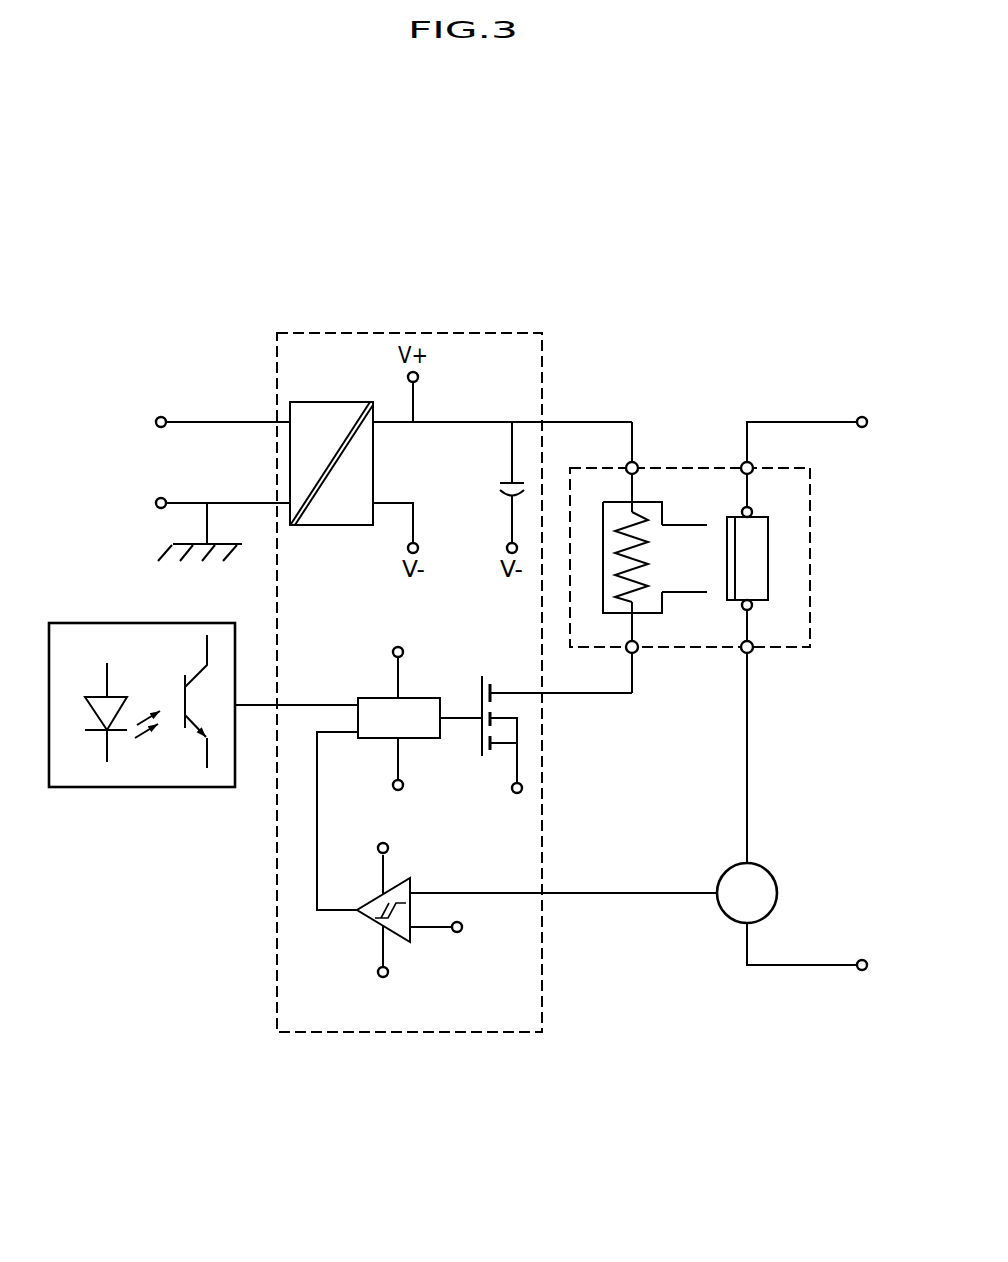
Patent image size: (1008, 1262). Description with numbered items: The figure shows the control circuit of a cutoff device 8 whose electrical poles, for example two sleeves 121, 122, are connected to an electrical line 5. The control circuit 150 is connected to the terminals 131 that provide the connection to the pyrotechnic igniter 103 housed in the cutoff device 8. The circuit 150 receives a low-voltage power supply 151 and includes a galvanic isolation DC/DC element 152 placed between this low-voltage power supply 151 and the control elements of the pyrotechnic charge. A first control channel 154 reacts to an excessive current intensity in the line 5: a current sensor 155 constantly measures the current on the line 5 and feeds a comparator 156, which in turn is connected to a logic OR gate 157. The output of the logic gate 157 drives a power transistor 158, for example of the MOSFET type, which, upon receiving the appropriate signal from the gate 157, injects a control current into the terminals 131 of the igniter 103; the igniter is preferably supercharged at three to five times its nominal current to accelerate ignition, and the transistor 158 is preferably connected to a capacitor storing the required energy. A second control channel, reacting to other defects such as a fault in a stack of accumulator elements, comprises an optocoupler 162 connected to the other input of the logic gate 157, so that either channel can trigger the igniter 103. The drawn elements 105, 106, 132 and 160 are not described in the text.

The electrical line 5 is at (802, 967).
The cutoff device 8 is at (662, 650).
The pyrotechnic igniter 103 is at (603, 528).
The contact element 105 is at (730, 582).
The relay contact 106 is at (760, 558).
The sleeve 121 is at (741, 464).
The sleeve 122 is at (754, 653).
The terminals 131 is at (634, 417).
The relay armature 132 is at (688, 522).
The control circuit 150 is at (405, 1035).
The low-voltage power supply 151 is at (245, 443).
The galvanic isolation DC/DC element 152 is at (333, 402).
The first control channel 154 is at (503, 897).
The current sensor 155 is at (716, 874).
The comparator 156 is at (354, 939).
The logic OR gate 157 is at (426, 691).
The power transistor 158 is at (494, 679).
The control signal line 160 is at (332, 702).
The optocoupler 162 is at (142, 790).